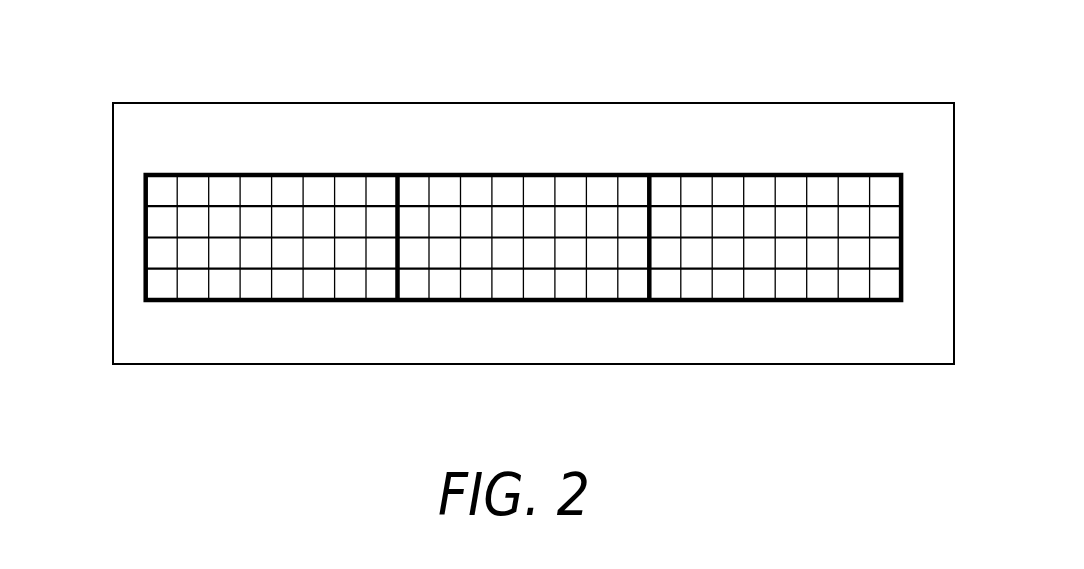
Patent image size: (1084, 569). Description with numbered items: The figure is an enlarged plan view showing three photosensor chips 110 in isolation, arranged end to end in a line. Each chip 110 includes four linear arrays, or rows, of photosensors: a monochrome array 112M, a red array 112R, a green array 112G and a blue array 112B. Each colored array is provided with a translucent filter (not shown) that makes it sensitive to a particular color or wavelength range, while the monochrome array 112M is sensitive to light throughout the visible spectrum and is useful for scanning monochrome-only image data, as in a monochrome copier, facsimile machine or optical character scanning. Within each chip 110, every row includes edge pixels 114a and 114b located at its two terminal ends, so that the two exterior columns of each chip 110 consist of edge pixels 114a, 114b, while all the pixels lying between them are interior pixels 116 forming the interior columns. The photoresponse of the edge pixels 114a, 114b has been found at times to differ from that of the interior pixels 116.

The photosensor chip 110 is at (281, 162).
The monochrome photosensor array 112M is at (141, 189).
The red photosensor array 112R is at (141, 226).
The green photosensor array 112G is at (141, 260).
The blue photosensor array 112B is at (141, 286).
The edge pixel 114a is at (413, 176).
The edge pixel 114b is at (632, 190).
The interior pixel 116 is at (224, 291).